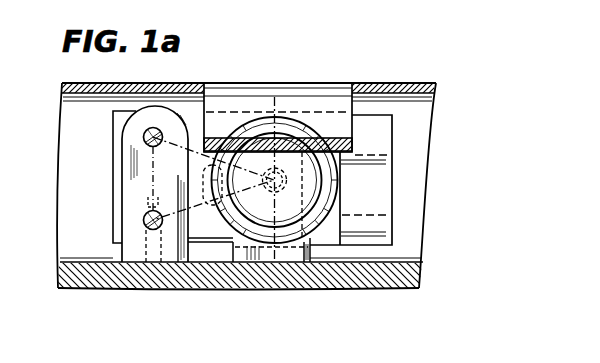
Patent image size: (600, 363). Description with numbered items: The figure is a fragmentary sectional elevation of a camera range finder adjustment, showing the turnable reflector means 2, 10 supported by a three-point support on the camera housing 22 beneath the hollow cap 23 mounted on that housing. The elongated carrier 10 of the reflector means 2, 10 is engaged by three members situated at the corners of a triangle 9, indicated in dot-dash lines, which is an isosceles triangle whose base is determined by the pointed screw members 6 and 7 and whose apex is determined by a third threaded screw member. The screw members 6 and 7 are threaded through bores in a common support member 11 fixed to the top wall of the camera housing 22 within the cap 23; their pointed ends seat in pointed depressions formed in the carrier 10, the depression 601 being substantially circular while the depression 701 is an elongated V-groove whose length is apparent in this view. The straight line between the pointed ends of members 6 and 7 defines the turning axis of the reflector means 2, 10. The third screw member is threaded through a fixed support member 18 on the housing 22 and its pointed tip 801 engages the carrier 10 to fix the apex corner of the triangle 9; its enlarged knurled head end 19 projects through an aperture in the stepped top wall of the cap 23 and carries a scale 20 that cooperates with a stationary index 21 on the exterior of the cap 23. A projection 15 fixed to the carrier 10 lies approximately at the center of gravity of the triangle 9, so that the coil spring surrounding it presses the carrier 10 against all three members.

The reflector means 2 is at (388, 161).
The screw member 6 is at (143, 137).
The screw member 7 is at (143, 221).
The triangle 9 is at (181, 143).
The carrier 10 is at (385, 232).
The common support member 11 is at (133, 255).
The projection 15 is at (213, 189).
The fixed support member 18 is at (250, 257).
The head end 19 is at (296, 245).
The scale 20 is at (328, 188).
The stationary index 21 is at (278, 138).
The camera housing 22 is at (398, 262).
The hollow cap 23 is at (398, 90).
The pointed depression 601 is at (129, 152).
The pointed depression 701 is at (160, 262).
The pointed tip 801 is at (273, 196).